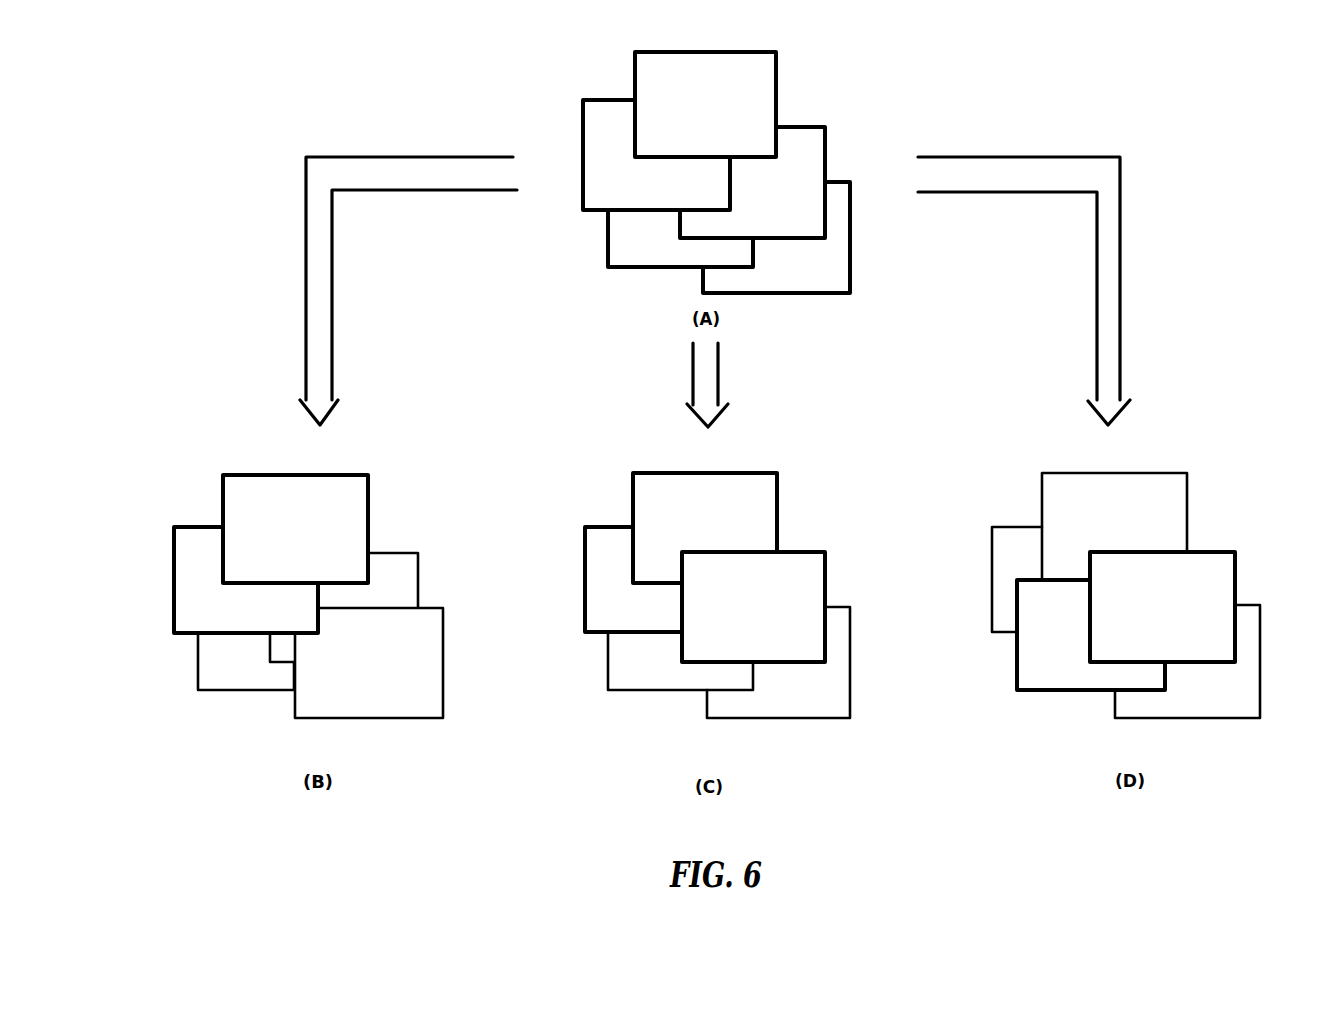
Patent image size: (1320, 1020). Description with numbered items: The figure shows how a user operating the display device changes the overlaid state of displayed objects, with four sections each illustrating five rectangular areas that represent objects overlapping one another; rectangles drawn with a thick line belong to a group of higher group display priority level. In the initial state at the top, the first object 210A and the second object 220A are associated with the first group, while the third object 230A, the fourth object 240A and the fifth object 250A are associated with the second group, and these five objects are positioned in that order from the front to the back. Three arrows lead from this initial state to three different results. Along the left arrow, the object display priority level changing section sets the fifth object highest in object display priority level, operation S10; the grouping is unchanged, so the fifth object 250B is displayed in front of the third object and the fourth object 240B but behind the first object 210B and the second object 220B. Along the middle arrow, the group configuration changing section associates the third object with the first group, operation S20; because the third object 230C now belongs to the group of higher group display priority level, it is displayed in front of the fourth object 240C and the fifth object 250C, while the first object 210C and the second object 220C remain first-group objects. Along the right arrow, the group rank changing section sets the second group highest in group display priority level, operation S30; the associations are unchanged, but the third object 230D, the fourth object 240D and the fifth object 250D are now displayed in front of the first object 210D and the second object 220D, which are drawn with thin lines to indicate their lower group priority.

The first object 210A is at (746, 52).
The second object 220A is at (636, 72).
The third object 230A is at (791, 127).
The fourth object 240A is at (608, 222).
The fifth object 250A is at (855, 245).
The object display priority level changing operation S10 is at (333, 273).
The group configuration changing operation S20 is at (719, 392).
The group rank changing operation S30 is at (1122, 272).
The first object 210B is at (332, 475).
The second object 220B is at (174, 557).
The fourth object 240B is at (198, 650).
The fifth object 250B is at (444, 665).
The first object 210C is at (753, 473).
The second object 220C is at (585, 555).
The third object 230C is at (790, 552).
The fourth object 240C is at (608, 650).
The fifth object 250C is at (855, 665).
The first object 210D is at (1160, 473).
The second object 220D is at (992, 555).
The third object 230D is at (1200, 552).
The fourth object 240D is at (1017, 650).
The fifth object 250D is at (1262, 665).